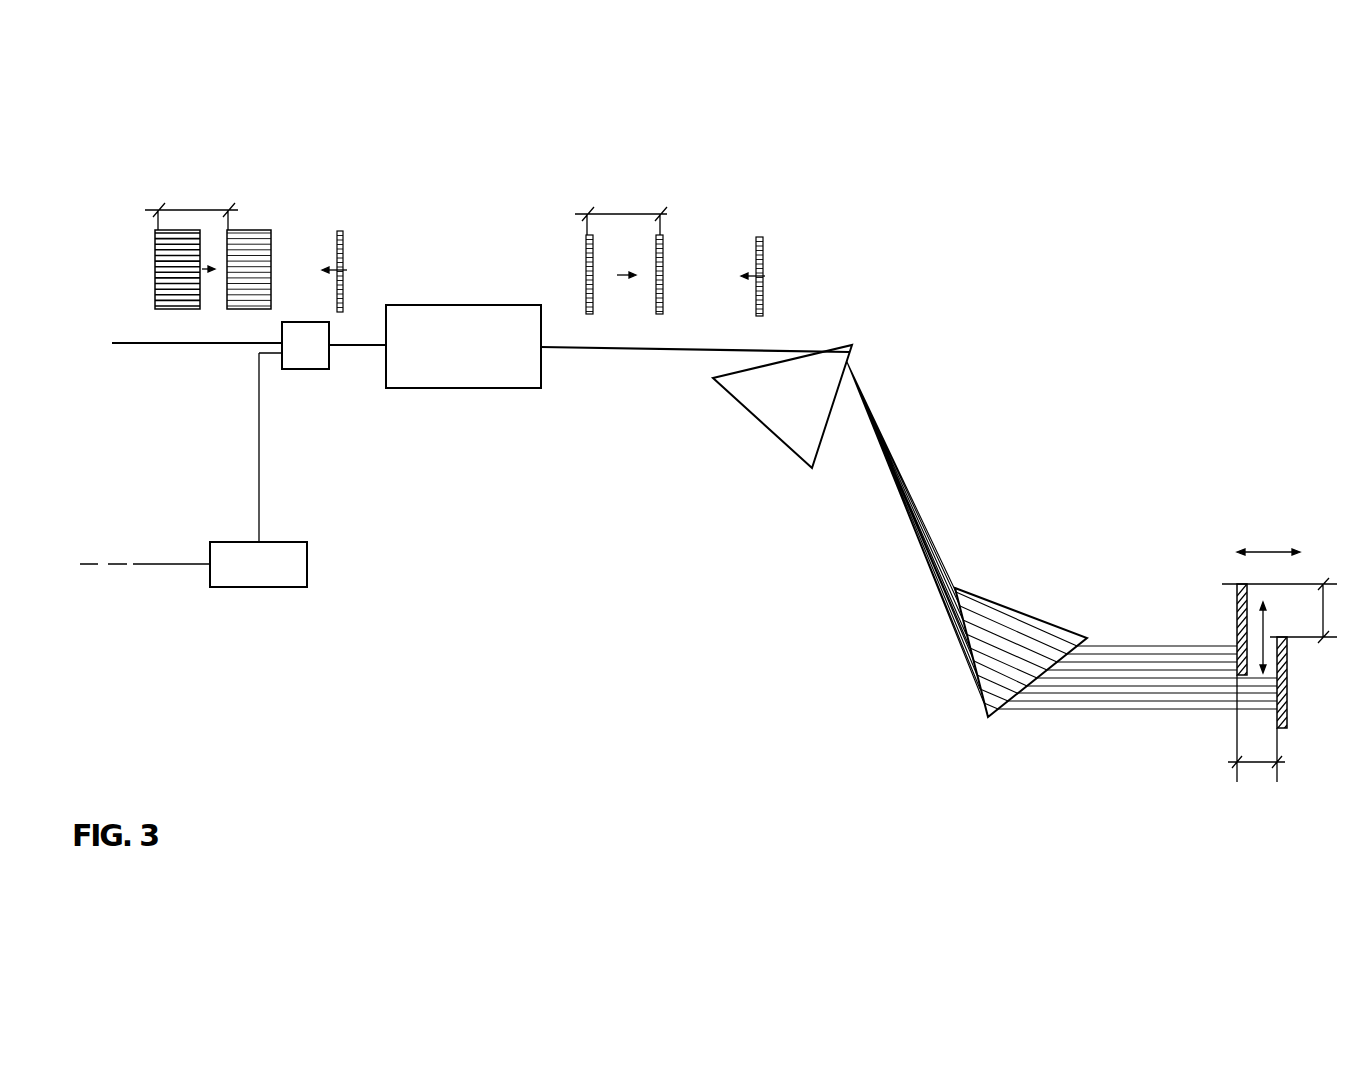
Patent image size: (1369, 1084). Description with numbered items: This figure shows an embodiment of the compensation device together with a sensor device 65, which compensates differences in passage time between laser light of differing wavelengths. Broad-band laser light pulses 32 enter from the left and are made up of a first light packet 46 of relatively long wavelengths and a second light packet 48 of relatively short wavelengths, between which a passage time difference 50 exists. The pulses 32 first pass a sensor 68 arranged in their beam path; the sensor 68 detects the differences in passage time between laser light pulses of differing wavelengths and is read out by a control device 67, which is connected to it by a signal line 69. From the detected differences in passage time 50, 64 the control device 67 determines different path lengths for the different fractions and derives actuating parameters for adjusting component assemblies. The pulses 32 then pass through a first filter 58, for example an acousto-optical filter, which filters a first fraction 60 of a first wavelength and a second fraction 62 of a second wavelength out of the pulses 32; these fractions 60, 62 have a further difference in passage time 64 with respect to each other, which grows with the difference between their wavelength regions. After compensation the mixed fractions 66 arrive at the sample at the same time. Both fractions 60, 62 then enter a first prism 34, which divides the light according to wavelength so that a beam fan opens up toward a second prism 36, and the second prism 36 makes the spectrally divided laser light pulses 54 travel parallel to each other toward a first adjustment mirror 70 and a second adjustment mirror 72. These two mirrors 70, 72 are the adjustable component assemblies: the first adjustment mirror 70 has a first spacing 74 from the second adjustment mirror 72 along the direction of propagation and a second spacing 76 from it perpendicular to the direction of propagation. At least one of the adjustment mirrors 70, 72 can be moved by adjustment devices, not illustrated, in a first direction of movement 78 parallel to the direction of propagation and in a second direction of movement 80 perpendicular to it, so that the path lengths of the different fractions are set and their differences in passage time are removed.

The broad-band laser light pulses 32 is at (195, 348).
The first prism 34 is at (755, 417).
The second prism 36 is at (985, 710).
The first light packet 46 is at (155, 245).
The second light packet 48 is at (271, 245).
The passage time difference 50 is at (186, 210).
The spectrally divided laser light pulses 54 is at (1135, 642).
The first filter 58 is at (455, 390).
The first fraction 60 is at (586, 265).
The second fraction 62 is at (663, 270).
The further difference in passage time 64 is at (630, 213).
The sensor device 65 is at (418, 554).
The mixed fractions 66 is at (343, 245).
The control device 67 is at (250, 590).
The sensor 68 is at (298, 370).
The control signal line 69 is at (165, 566).
The first adjustment mirror 70 is at (1237, 620).
The second adjustment mirror 72 is at (1287, 710).
The first spacing 74 is at (1250, 765).
The second spacing 76 is at (1323, 610).
The first direction of movement 78 is at (1273, 550).
The second direction of movement 80 is at (1272, 620).